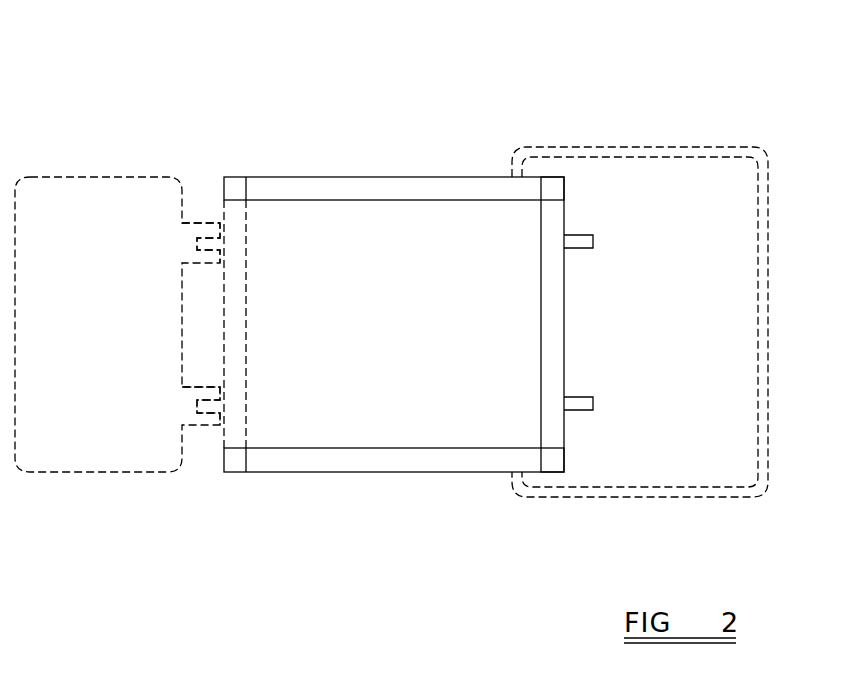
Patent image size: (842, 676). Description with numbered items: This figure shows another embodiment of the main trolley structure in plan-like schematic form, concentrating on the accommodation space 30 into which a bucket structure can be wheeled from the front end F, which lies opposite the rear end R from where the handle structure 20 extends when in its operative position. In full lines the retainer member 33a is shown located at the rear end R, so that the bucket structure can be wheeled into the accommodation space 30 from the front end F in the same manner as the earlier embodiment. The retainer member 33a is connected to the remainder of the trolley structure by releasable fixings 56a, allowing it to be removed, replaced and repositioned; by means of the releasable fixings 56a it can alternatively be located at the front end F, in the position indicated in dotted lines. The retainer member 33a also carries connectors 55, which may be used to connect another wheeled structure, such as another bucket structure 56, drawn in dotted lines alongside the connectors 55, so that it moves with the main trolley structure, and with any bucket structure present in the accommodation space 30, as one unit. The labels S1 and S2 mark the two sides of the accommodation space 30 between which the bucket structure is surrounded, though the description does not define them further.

The front end F is at (140, 162).
The connectors 55 is at (200, 243).
The another bucket structure 56 is at (227, 177).
The releasable fixings 56a is at (550, 187).
The retainer member 33a is at (243, 303).
The accommodation space 30 is at (372, 385).
The handle structure 20 is at (683, 147).
The first surface S1 is at (353, 177).
The second surface S2 is at (287, 472).
The rear end R is at (592, 347).